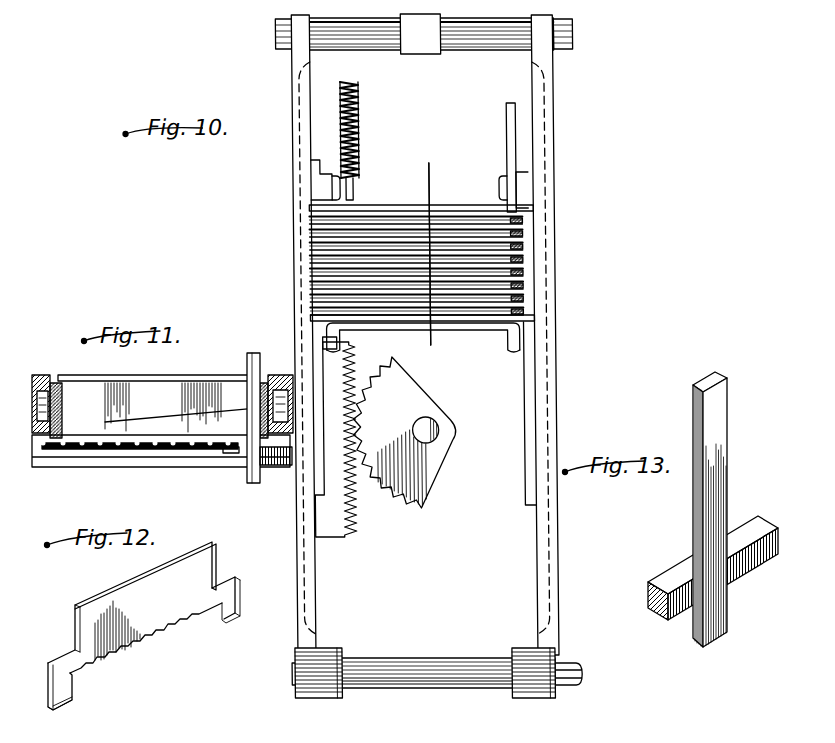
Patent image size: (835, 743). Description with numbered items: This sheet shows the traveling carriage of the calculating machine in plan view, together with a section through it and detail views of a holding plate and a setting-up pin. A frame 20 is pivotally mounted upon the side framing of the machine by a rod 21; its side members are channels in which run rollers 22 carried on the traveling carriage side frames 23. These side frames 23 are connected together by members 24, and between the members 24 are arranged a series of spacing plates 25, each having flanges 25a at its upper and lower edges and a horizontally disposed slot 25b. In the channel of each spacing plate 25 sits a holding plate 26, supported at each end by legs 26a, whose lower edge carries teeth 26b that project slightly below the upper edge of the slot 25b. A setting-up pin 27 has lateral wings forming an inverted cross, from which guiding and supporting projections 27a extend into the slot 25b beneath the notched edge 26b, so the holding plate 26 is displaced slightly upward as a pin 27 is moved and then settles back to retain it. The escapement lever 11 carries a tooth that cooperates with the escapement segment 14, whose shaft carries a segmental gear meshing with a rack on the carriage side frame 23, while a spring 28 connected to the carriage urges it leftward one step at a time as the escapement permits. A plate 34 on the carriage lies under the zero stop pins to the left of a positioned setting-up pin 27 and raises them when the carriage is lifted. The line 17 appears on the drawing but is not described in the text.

In FIG. 10, the escapement lever 11 is at (605, 283).
In FIG. 10, the escapement segment 14 is at (439, 268).
In FIG. 10, the vertical guide line 17 is at (429, 243).
In FIG. 10, the frame 20 is at (557, 570).
In FIG. 11, the frame 20 is at (283, 442).
In FIG. 10, the rod 21 is at (387, 681).
In FIG. 11, the rollers 22 is at (50, 420).
In FIG. 10, the traveling carriage side frames 23 is at (315, 350).
In FIG. 11, the traveling carriage side frames 23 is at (258, 398).
In FIG. 10, the members 24 is at (490, 326).
In FIG. 10, the spacing plates 25 is at (470, 240).
In FIG. 11, the spacing plates 25 is at (163, 407).
In FIG. 11, the flanges 25a is at (183, 377).
In FIG. 11, the slot 25b is at (165, 450).
In FIG. 12, the holding plate 26 is at (122, 628).
In FIG. 12, the legs 26a is at (73, 702).
In FIG. 12, the teeth 26b is at (152, 642).
In FIG. 10, the setting-up pin 27 is at (526, 299).
In FIG. 11, the setting-up pin 27 is at (255, 354).
In FIG. 13, the setting-up pin 27 is at (718, 497).
In FIG. 11, the guiding and supporting projections 27a is at (252, 452).
In FIG. 13, the guiding and supporting projections 27a is at (770, 540).
In FIG. 10, the spring 28 is at (361, 126).
In FIG. 10, the plate 34 is at (518, 141).